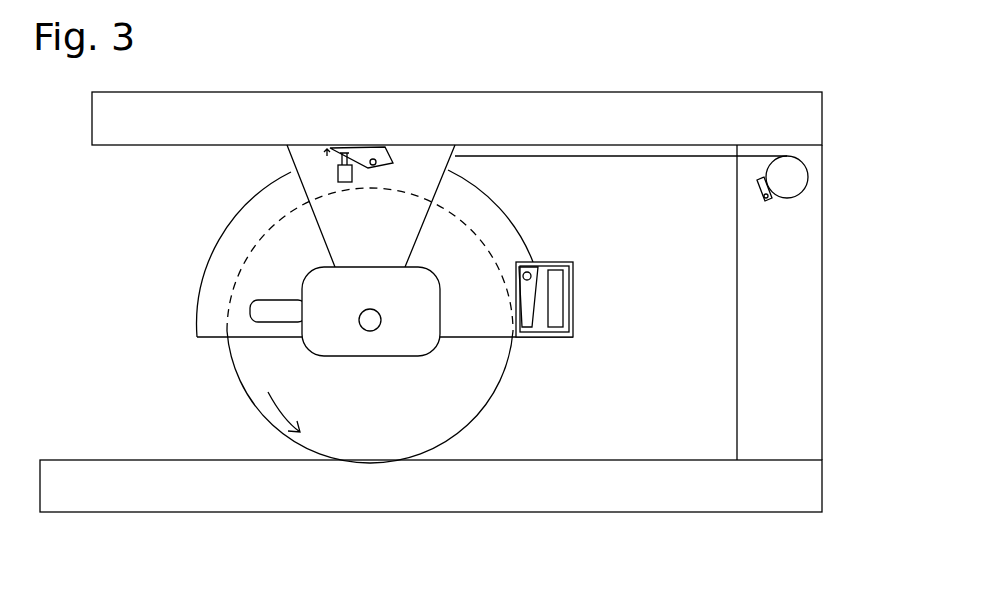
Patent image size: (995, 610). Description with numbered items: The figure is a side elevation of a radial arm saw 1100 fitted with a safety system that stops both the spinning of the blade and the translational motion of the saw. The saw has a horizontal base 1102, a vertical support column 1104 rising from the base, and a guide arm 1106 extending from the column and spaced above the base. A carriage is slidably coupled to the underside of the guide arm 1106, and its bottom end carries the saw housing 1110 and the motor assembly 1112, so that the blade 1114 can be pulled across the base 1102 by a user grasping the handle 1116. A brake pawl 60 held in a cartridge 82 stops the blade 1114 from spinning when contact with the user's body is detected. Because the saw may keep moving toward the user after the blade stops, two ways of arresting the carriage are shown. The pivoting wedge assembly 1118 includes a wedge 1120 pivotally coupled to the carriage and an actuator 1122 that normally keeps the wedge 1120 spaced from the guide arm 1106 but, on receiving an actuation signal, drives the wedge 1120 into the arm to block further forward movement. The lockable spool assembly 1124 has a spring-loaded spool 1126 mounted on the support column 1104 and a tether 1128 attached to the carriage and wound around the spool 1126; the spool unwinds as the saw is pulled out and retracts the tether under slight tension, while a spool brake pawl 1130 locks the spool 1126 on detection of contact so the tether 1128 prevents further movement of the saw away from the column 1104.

The radial arm saw 1100 is at (505, 66).
The horizontal base 1102 is at (465, 497).
The vertical support column 1104 is at (798, 350).
The guide arm 1106 is at (627, 105).
The saw housing 1110 is at (205, 267).
The motor assembly 1112 is at (307, 347).
The blade 1114 is at (435, 417).
The handle 1116 is at (250, 308).
The pivoting wedge assembly 1118 is at (257, 167).
The wedge 1120 is at (377, 153).
The actuator 1122 is at (345, 182).
The lockable spool assembly 1124 is at (721, 278).
The spring-loaded spool 1126 is at (796, 198).
The tether 1128 is at (655, 158).
The spool brake pawl 1130 is at (755, 198).
The cartridge 82 is at (550, 335).
The brake pawl 60 is at (527, 327).